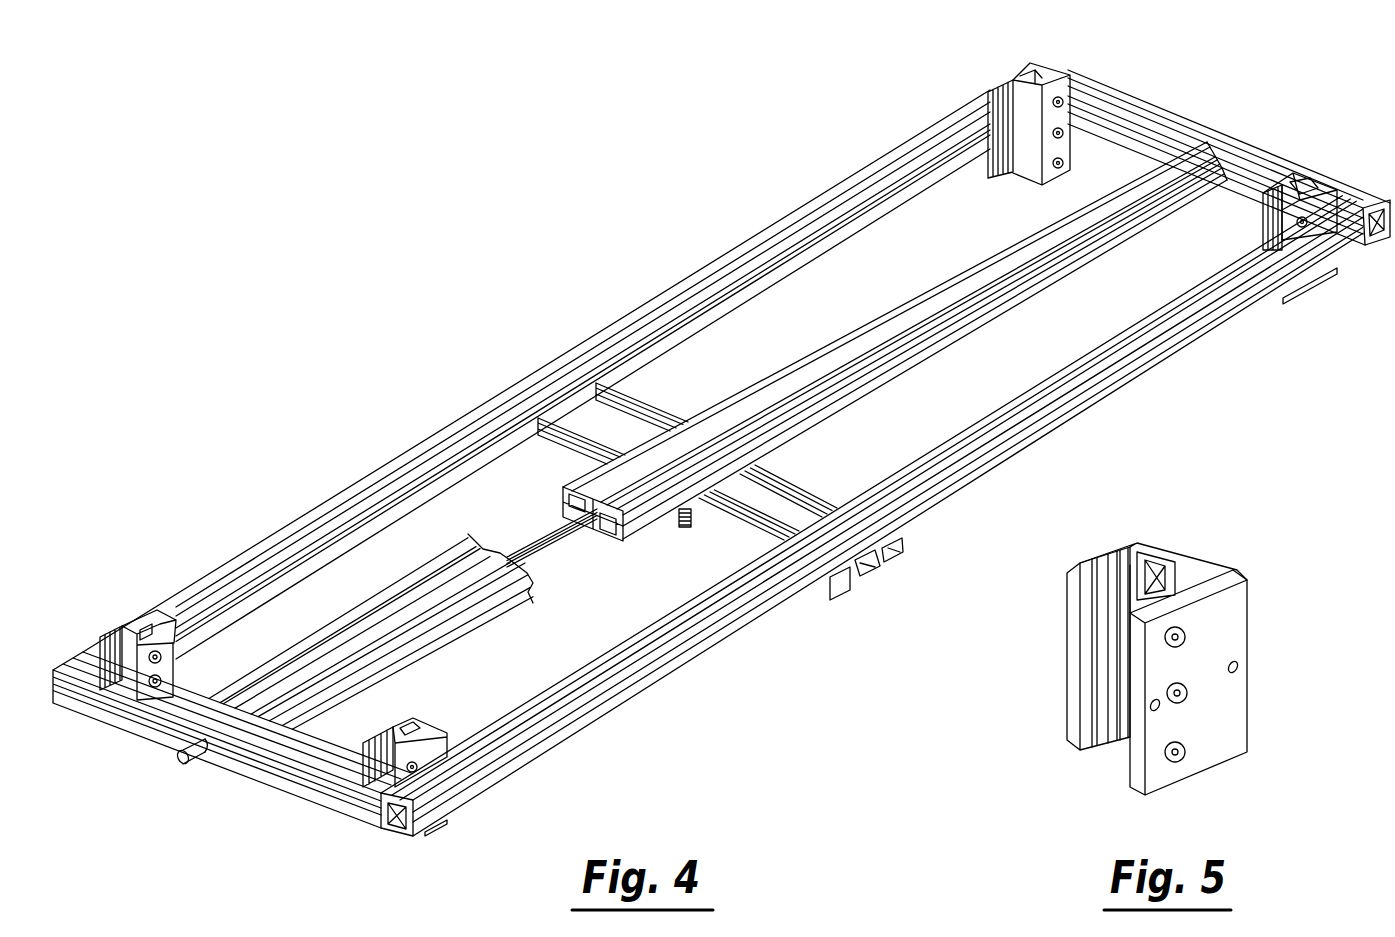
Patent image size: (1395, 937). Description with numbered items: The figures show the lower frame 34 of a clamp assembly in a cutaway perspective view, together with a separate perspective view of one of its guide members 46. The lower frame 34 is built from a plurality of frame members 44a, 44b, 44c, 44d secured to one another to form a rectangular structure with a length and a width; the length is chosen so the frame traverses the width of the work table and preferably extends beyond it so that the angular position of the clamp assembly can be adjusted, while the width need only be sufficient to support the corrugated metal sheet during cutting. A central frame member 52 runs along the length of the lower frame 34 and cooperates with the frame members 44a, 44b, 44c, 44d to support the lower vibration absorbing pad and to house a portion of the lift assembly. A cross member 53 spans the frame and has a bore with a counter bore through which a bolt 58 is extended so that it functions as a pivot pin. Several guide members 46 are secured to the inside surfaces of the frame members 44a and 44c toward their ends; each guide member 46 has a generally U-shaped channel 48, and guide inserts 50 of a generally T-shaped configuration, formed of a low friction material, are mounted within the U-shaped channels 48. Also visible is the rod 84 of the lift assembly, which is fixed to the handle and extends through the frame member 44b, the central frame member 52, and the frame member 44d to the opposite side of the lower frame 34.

In FIG. 4, the lower frame 34 is at (721, 449).
In FIG. 4, the frame member 44a is at (935, 452).
In FIG. 4, the frame member 44b is at (277, 806).
In FIG. 4, the frame member 44c is at (370, 470).
In FIG. 4, the frame member 44d is at (1150, 100).
In FIG. 4, the guide member 46 is at (1008, 80).
In FIG. 5, the guide member 46 is at (1172, 646).
In FIG. 5, the U-shaped channel 48 is at (1098, 597).
In FIG. 5, the guide insert 50 is at (1115, 578).
In FIG. 4, the central frame member 52 is at (1028, 300).
In FIG. 4, the cross member 53 is at (660, 407).
In FIG. 4, the bolt 58 is at (685, 535).
In FIG. 4, the rod 84 is at (540, 533).